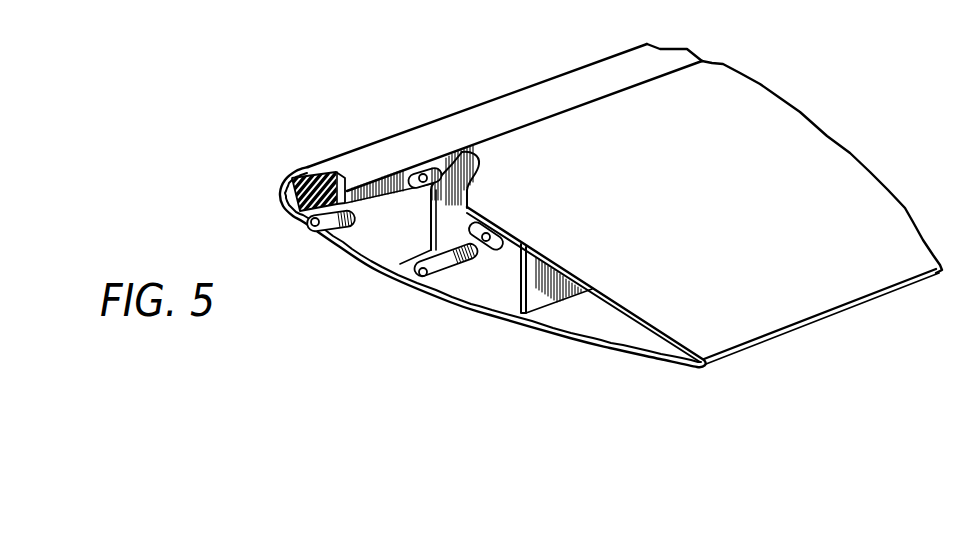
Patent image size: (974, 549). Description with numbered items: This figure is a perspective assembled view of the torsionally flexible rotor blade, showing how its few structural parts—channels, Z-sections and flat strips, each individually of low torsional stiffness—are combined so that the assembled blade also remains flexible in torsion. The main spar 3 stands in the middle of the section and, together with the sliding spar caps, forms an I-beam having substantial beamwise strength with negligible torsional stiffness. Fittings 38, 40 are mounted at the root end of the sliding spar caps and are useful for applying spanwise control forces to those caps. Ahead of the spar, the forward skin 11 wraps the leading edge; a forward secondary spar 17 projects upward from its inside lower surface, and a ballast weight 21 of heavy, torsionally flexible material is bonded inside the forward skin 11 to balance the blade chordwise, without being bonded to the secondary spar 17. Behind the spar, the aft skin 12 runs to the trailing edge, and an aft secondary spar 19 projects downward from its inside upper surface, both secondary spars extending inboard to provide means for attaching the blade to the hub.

The forward skin 11 is at (380, 140).
The aft skin 12 is at (788, 323).
The main spar 3 is at (455, 207).
The fitting 38 is at (456, 168).
The aft secondary spar 19 is at (500, 228).
The fitting 40 is at (440, 270).
The ballast weight 21 is at (288, 191).
The forward secondary spar 17 is at (302, 228).